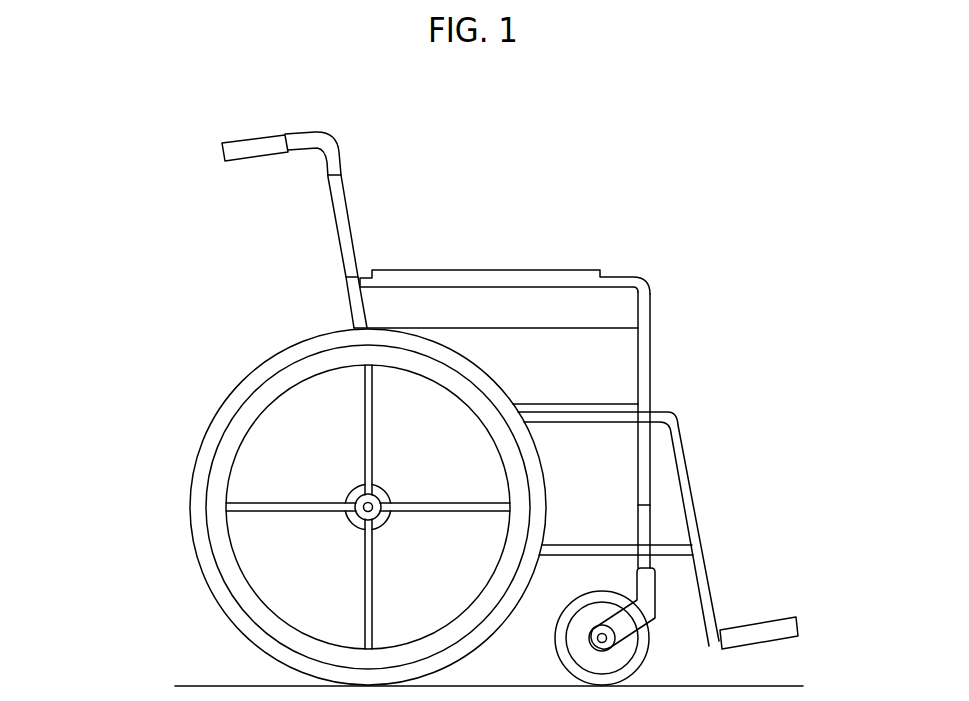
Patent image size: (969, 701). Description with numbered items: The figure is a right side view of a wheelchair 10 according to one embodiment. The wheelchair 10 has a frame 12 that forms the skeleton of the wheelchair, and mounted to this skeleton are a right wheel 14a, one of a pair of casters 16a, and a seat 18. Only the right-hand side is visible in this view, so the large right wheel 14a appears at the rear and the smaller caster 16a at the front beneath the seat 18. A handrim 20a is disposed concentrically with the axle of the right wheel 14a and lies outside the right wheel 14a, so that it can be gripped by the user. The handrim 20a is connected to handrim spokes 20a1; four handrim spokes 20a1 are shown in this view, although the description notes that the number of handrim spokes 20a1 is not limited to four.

The wheelchair 10 is at (491, 220).
The frame 12 is at (651, 297).
The right wheel 14a is at (277, 357).
The caster 16a is at (650, 656).
The seat 18 is at (596, 403).
The handrim 20a is at (237, 420).
The handrim spokes 20a1 is at (253, 502).